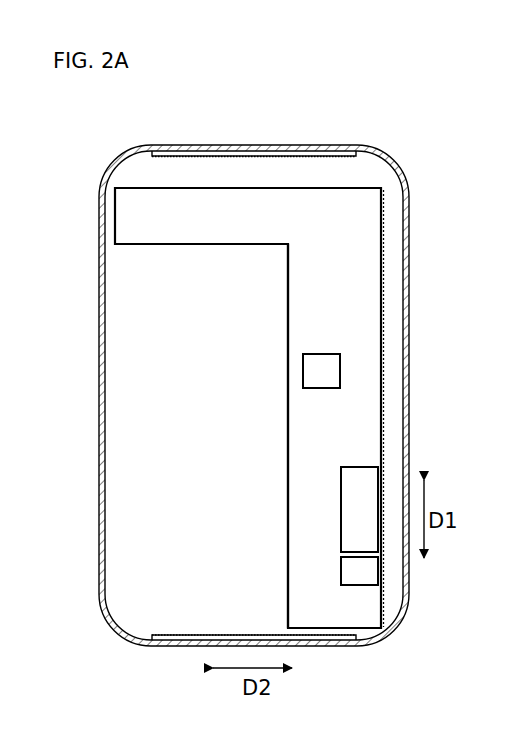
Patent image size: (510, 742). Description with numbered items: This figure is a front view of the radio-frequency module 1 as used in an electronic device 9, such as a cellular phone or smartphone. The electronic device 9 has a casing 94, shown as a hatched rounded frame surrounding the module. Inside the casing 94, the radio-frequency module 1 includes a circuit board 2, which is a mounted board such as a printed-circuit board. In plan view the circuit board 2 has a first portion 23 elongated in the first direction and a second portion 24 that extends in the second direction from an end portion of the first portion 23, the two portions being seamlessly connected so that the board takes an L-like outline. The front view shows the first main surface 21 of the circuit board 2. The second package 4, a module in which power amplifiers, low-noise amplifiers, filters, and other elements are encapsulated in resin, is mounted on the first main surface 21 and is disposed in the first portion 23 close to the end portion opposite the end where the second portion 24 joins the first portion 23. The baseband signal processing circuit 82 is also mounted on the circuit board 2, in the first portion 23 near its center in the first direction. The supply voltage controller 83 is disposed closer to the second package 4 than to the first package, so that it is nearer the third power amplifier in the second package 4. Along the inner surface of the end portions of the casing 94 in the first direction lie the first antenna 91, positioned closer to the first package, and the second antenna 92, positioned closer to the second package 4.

The electronic device 9 is at (383, 133).
The casing 94 is at (408, 198).
The first antenna 91 is at (258, 151).
The second antenna 92 is at (228, 635).
The radio-frequency module 1 is at (382, 184).
The circuit board 2 is at (185, 294).
The second portion 24 is at (198, 233).
The first portion 23 is at (300, 333).
The first main surface 21 is at (290, 445).
The baseband signal processing circuit 82 is at (324, 381).
The second package 4 is at (348, 506).
The supply voltage controller 83 is at (348, 571).